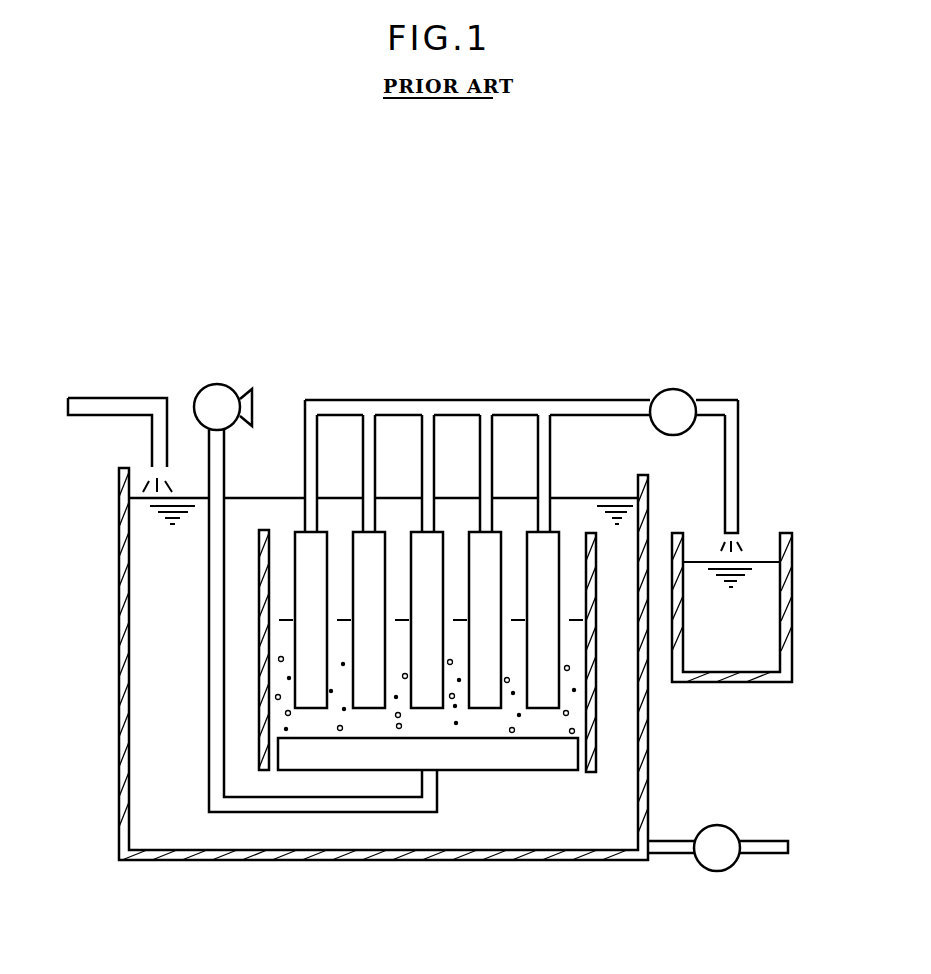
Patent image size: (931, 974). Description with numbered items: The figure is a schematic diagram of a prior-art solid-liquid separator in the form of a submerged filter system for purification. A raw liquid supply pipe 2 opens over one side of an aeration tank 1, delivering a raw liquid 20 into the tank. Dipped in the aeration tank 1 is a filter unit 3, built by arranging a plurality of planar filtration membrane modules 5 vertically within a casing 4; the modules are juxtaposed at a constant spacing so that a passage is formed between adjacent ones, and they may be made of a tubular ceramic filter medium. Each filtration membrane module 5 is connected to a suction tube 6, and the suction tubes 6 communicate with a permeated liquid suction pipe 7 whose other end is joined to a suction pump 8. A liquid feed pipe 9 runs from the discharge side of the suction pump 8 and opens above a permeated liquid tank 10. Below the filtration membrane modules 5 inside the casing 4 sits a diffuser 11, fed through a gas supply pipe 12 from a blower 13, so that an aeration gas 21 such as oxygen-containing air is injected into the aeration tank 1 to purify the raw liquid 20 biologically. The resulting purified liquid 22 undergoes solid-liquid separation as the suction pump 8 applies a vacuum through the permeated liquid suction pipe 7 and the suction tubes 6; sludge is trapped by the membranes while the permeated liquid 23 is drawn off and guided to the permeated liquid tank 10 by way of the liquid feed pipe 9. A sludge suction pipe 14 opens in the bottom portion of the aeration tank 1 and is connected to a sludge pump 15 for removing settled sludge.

The aeration tank 1 is at (120, 662).
The raw liquid supply pipe 2 is at (112, 398).
The filter unit 3 is at (258, 711).
The casing 4 is at (598, 730).
The filtration membrane module 5 is at (478, 535).
The suction tube 6 is at (371, 440).
The permeated liquid suction pipe 7 is at (566, 402).
The suction pump 8 is at (680, 388).
The liquid feed pipe 9 is at (739, 437).
The permeated liquid tank 10 is at (792, 640).
The diffuser 11 is at (540, 762).
The gas supply pipe 12 is at (224, 458).
The blower 13 is at (217, 385).
The sludge suction pipe 14 is at (667, 840).
The sludge pump 15 is at (735, 828).
The raw liquid 20 is at (141, 478).
The aeration gas 21 is at (466, 700).
The purified liquid 22 is at (137, 556).
The permeated liquid 23 is at (745, 540).